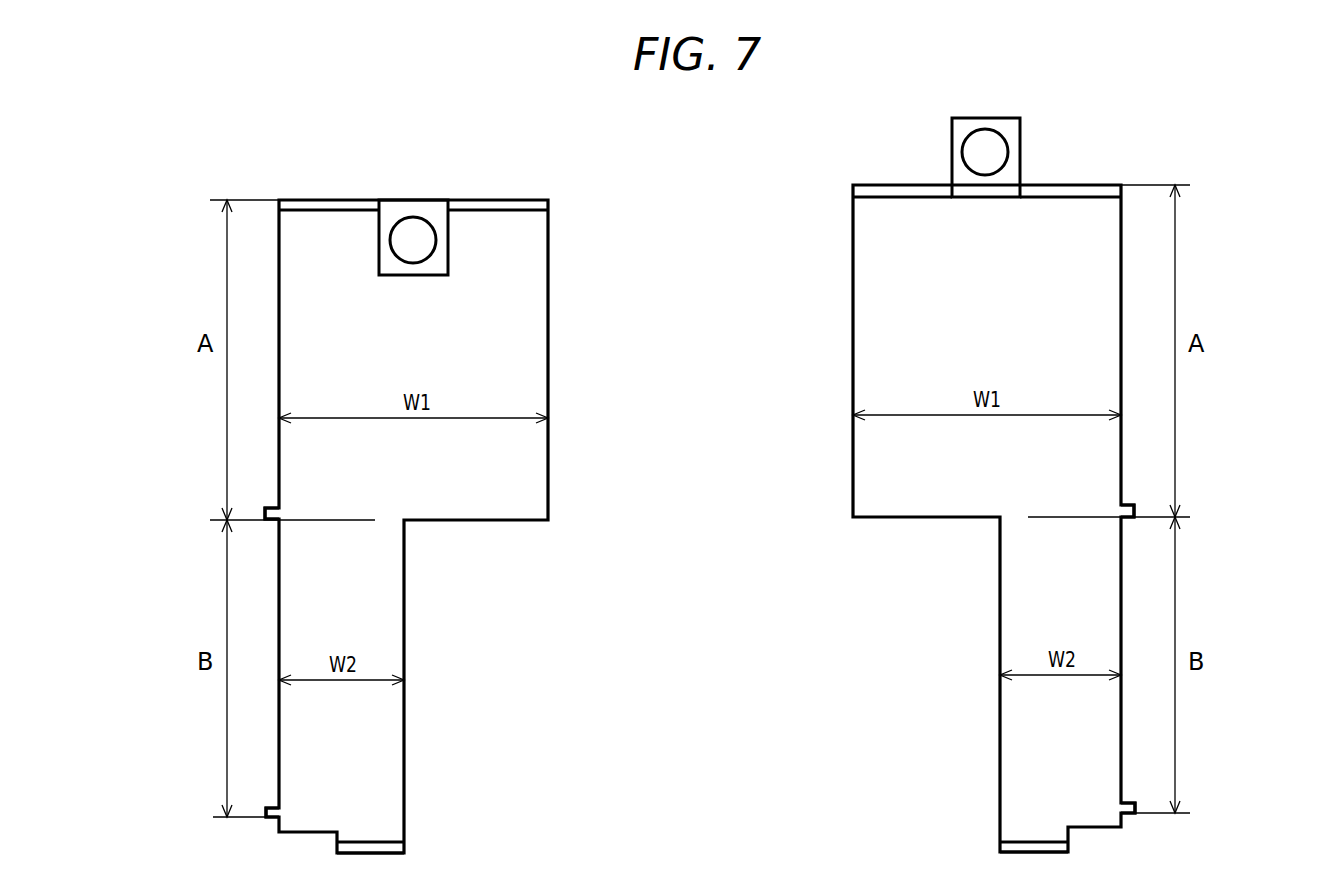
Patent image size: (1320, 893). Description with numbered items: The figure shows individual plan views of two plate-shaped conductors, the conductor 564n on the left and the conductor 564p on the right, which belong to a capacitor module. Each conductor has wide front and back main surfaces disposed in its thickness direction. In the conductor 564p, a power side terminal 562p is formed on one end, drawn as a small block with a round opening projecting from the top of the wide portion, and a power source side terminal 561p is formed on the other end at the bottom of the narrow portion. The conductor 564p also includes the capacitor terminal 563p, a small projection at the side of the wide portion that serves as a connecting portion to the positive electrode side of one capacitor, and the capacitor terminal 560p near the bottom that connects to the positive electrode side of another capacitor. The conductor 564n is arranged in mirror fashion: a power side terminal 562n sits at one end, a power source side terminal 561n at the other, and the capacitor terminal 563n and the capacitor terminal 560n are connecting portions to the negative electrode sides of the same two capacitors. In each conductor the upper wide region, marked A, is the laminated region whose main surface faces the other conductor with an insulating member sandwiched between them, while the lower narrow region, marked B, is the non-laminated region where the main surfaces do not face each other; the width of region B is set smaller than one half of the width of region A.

The capacitor terminal 560n is at (275, 817).
The power source side terminal 561n is at (405, 848).
The power side terminal 562n is at (410, 207).
The capacitor terminal 563n is at (268, 512).
The conductor 564n is at (548, 372).
The capacitor terminal 560p is at (1130, 815).
The power source side terminal 561p is at (1000, 847).
The power side terminal 562p is at (1010, 135).
The capacitor terminal 563p is at (1133, 502).
The conductor 564p is at (852, 287).